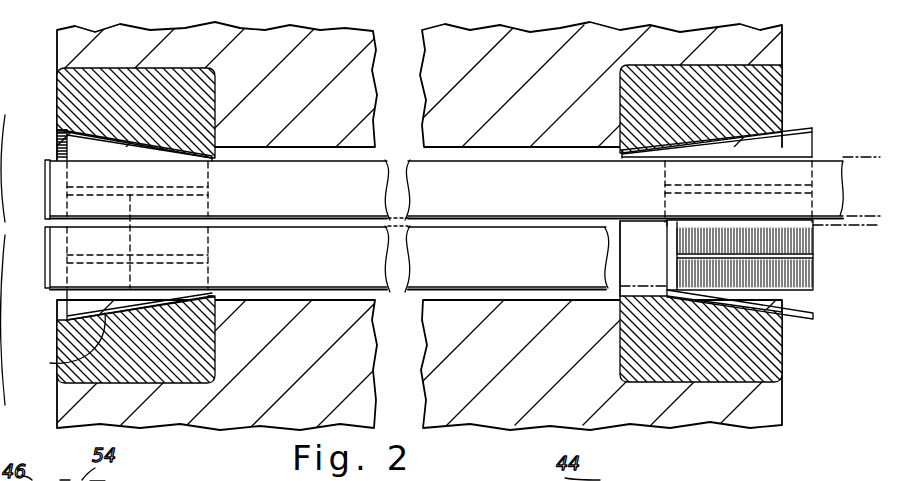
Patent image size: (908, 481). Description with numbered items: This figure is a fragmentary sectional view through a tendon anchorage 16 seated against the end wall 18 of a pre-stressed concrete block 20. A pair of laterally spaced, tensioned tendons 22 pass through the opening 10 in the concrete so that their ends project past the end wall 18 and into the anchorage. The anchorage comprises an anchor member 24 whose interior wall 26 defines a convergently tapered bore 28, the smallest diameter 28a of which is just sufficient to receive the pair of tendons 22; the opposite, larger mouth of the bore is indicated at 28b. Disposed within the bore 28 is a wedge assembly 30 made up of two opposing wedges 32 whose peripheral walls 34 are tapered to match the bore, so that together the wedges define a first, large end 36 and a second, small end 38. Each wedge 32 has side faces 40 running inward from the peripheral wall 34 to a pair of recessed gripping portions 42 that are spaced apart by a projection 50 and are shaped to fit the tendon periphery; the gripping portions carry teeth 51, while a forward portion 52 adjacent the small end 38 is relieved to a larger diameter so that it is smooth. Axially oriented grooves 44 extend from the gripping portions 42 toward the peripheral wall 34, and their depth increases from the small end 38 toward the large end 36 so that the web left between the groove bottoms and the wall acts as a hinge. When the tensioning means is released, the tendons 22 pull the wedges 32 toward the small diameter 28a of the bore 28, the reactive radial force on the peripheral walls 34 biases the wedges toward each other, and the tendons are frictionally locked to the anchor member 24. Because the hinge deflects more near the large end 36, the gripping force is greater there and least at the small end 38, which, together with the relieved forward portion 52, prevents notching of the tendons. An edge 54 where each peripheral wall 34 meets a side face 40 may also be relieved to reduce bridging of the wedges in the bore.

The opening 10 is at (322, 296).
The tendon anchorage 16 is at (39, 348).
The end wall 18 is at (57, 58).
The concrete block 20 is at (512, 92).
The tendon 22 is at (418, 168).
The anchor member 24 is at (205, 343).
The interior wall 26 is at (690, 335).
The tapered bore 28 is at (630, 268).
The smallest diameter 28a is at (628, 158).
The shaft liner 28b is at (782, 127).
The wedge assembly 30 is at (37, 133).
The wedge 32 is at (75, 304).
The peripheral wall 34 is at (808, 343).
The first end 36 is at (57, 148).
The second end 38 is at (220, 296).
The side face 40 is at (112, 161).
The gripping portion 42 is at (815, 268).
The groove 44 is at (132, 230).
The projection 50 is at (187, 224).
The teeth 51 is at (735, 283).
The forward portion 52 is at (670, 250).
The edge 54 is at (65, 345).